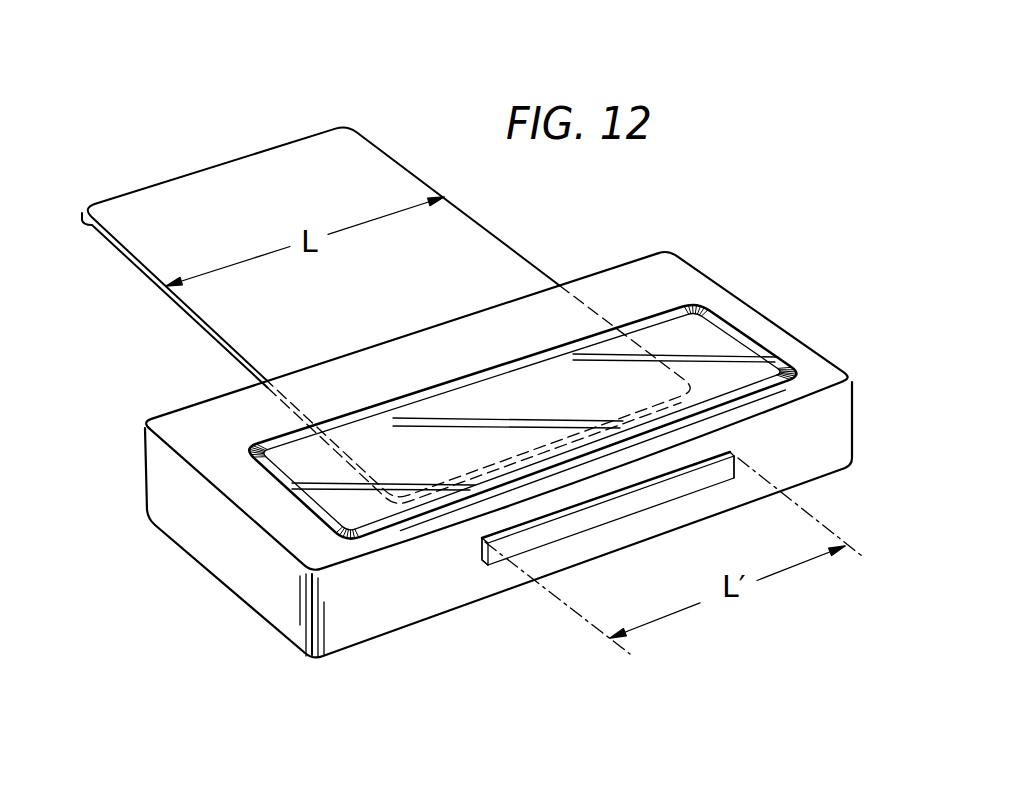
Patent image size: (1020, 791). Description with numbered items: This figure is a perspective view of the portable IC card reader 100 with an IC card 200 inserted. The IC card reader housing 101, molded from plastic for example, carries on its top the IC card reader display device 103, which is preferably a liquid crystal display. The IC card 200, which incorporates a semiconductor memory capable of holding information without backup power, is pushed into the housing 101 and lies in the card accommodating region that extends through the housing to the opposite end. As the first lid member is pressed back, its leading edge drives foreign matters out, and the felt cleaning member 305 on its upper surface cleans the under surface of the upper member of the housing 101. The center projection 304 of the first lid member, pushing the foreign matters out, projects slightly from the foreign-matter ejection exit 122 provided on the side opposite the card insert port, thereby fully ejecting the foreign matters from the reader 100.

The portable IC card reader 100 is at (539, 444).
The IC card reader housing 101 is at (837, 412).
The IC card reader display device 103 is at (735, 350).
The foreign-matter ejection exit 122 is at (481, 548).
The IC card 200 is at (473, 232).
The center projection 304 is at (563, 530).
The cleaning member 305 is at (736, 456).